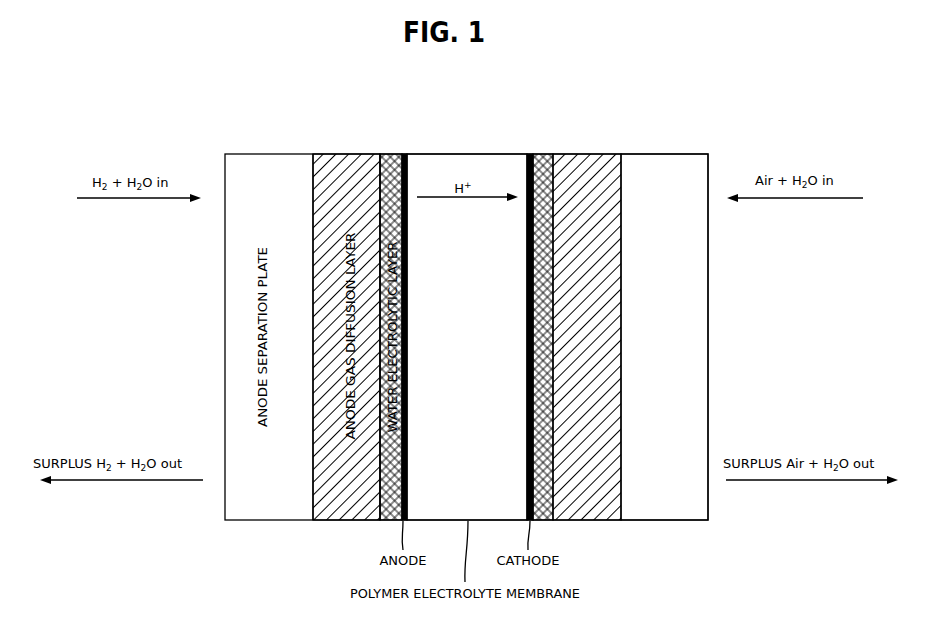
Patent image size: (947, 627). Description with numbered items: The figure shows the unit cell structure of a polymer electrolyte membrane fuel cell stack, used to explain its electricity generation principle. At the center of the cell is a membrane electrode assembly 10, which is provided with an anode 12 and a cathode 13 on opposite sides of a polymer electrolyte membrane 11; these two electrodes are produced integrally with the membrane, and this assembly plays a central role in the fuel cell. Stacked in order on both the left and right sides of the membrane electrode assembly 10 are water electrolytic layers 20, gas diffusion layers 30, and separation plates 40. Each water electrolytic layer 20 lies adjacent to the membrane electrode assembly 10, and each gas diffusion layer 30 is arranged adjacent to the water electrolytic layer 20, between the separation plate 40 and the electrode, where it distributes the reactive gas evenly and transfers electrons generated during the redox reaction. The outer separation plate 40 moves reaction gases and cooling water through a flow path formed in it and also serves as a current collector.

The membrane electrode assembly 10 is at (515, 103).
The polymer electrolyte membrane 11 is at (462, 154).
The anode 12 is at (405, 154).
The cathode 13 is at (530, 154).
The water electrolytic layer 20 is at (543, 154).
The gas diffusion layer 30 is at (587, 154).
The separation plate 40 is at (659, 154).